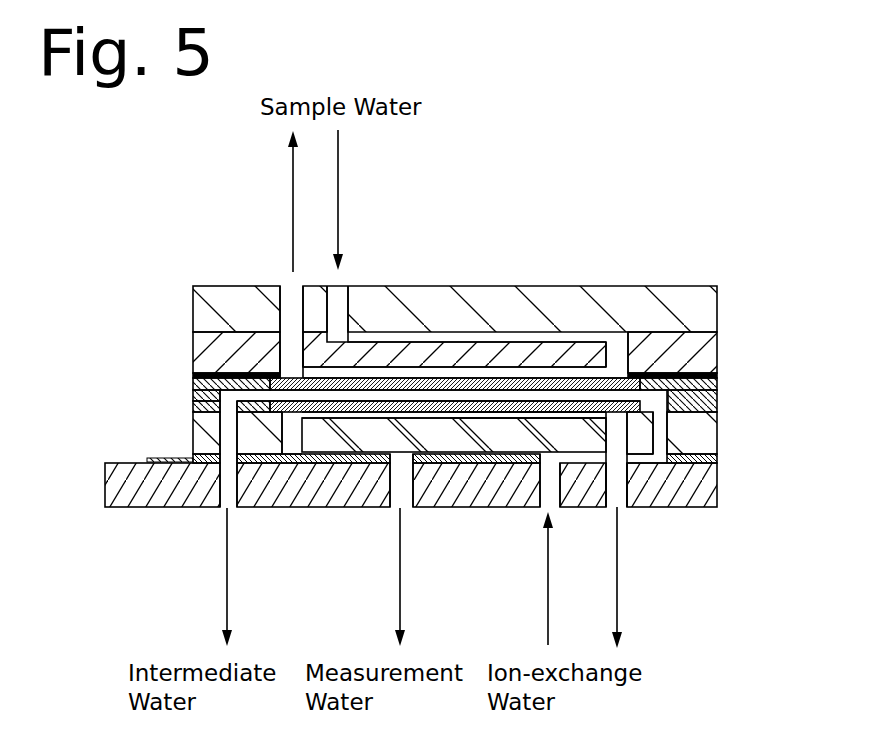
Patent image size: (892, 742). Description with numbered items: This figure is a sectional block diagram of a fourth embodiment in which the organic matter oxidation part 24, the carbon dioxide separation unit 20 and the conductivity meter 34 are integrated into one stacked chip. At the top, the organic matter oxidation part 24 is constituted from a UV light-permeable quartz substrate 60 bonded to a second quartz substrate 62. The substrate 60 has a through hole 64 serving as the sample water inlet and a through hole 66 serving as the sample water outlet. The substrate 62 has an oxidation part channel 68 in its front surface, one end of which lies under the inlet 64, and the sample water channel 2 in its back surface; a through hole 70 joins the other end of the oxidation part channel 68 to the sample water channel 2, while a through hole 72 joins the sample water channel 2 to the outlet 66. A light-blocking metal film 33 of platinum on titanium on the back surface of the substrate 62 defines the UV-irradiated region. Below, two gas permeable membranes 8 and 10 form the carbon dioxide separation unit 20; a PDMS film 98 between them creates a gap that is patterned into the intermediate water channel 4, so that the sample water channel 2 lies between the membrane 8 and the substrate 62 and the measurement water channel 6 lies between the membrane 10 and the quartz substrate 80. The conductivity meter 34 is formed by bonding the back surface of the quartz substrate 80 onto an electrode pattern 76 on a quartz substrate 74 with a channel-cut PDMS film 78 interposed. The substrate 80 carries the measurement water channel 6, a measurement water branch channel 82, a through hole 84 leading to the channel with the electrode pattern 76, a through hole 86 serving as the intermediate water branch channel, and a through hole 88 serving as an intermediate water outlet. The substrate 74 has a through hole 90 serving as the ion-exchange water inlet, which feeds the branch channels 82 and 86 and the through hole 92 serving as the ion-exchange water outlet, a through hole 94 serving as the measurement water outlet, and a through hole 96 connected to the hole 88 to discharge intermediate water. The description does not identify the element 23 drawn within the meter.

The sample water channel 2 is at (446, 408).
The intermediate water channel 4 is at (412, 397).
The measurement water channel 6 is at (508, 415).
The gas permeable membrane 8 is at (418, 377).
The gas permeable membrane 10 is at (547, 416).
The carbon dioxide separation unit 20 is at (489, 415).
The electrode 23 is at (585, 438).
The organic matter oxidation part 24 is at (485, 272).
The light-blocking metal film 33 is at (718, 375).
The conductivity meter 34 is at (446, 504).
The UV light-incident-side substrate 60 is at (703, 317).
The substrate 62 is at (703, 360).
The through hole 64 is at (340, 303).
The through hole 66 is at (293, 303).
The oxidation part channel 68 is at (382, 337).
The through hole 70 is at (617, 362).
The through hole 72 is at (293, 358).
The quartz substrate 74 is at (718, 495).
The electrode pattern 76 is at (158, 458).
The film 78 is at (718, 461).
The quartz substrate 80 is at (693, 439).
The measurement water branch channel 82 is at (618, 478).
The through hole 84 is at (293, 433).
The through hole 86 is at (657, 428).
The through hole 88 is at (167, 488).
The through hole 90 is at (548, 477).
The through hole 92 is at (617, 440).
The through hole 94 is at (405, 477).
The through hole 96 is at (227, 485).
The PDMS film 98 is at (718, 396).